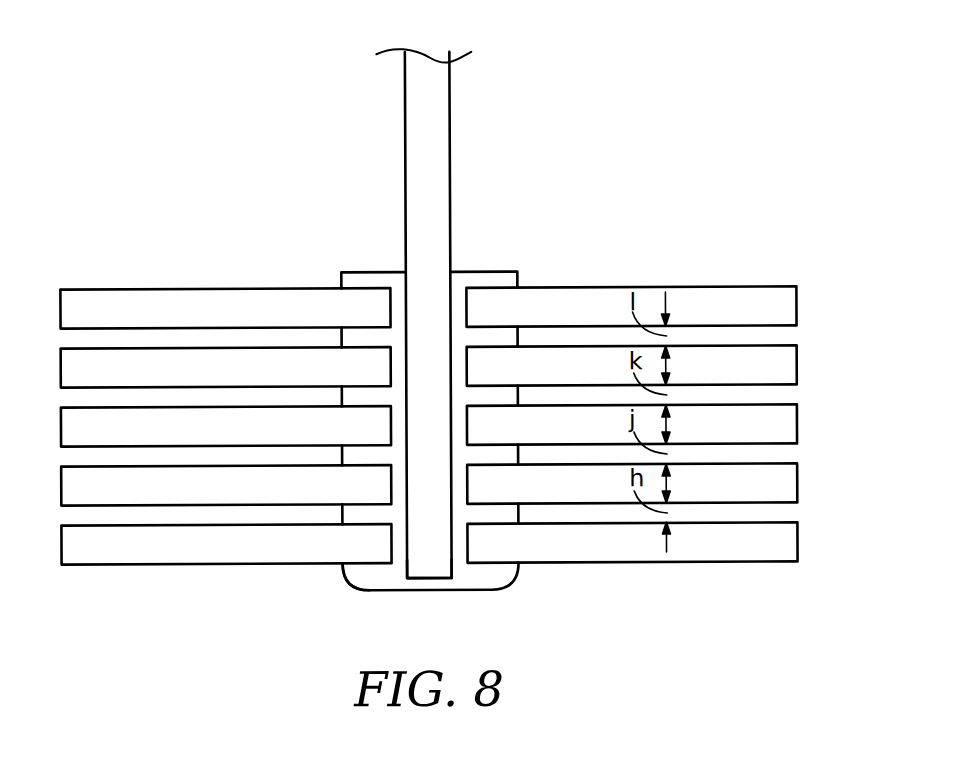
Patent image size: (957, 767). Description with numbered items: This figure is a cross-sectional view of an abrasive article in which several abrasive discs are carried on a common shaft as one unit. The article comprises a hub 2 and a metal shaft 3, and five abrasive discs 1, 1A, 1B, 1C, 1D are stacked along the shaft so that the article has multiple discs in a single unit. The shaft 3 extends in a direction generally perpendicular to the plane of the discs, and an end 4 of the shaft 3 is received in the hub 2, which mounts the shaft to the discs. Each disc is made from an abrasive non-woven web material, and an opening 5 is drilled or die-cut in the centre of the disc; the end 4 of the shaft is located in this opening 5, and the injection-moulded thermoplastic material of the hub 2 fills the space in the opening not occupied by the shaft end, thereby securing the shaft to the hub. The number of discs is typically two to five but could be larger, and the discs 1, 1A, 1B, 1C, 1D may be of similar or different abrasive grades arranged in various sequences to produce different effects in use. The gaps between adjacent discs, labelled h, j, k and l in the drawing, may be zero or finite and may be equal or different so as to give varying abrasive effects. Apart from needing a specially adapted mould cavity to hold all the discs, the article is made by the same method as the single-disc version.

The abrasive disc 1 is at (782, 540).
The abrasive disc 1A is at (782, 481).
The abrasive disc 1B is at (782, 422).
The abrasive disc 1C is at (782, 363).
The abrasive disc 1D is at (782, 304).
The hub 2 is at (490, 580).
The metal shaft 3 is at (435, 119).
The end of the shaft 4 is at (428, 565).
The opening 5 is at (368, 573).